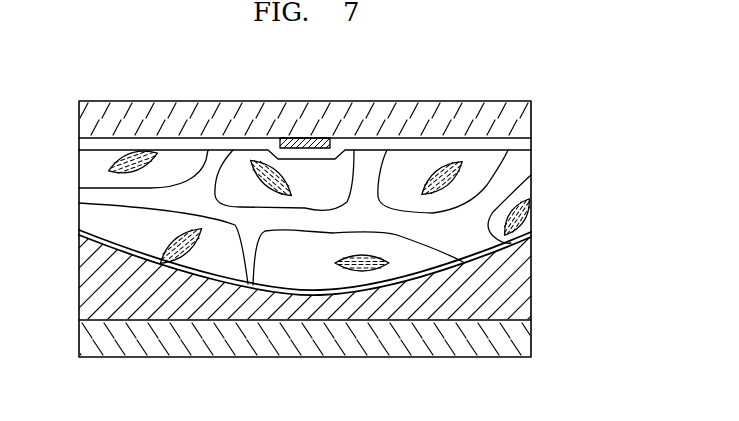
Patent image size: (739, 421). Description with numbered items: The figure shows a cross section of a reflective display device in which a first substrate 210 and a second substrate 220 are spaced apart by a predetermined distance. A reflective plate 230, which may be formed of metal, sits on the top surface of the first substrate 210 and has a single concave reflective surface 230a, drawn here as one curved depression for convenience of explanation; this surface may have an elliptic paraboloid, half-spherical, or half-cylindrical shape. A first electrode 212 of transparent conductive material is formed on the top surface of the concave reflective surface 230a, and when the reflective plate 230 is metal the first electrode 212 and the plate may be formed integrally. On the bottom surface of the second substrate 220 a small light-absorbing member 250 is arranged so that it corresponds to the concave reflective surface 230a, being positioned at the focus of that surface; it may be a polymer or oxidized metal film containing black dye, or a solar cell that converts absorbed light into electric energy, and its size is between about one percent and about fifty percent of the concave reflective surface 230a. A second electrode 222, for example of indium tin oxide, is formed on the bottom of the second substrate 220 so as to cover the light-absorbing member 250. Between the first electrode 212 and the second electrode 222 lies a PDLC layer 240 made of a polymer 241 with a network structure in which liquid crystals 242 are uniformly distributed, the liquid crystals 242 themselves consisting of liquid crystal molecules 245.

The second substrate 220 is at (531, 120).
The second electrode 222 is at (531, 144).
The light-absorbing member 250 is at (303, 137).
The PDLC layer 240 is at (361, 217).
The polymer 241 is at (531, 160).
The liquid crystals 242 is at (531, 188).
The liquid crystal molecules 245 is at (531, 217).
The first electrode 212 is at (531, 240).
The reflective plate 230 is at (531, 288).
The concave reflective surface 230a is at (432, 277).
The first substrate 210 is at (531, 338).